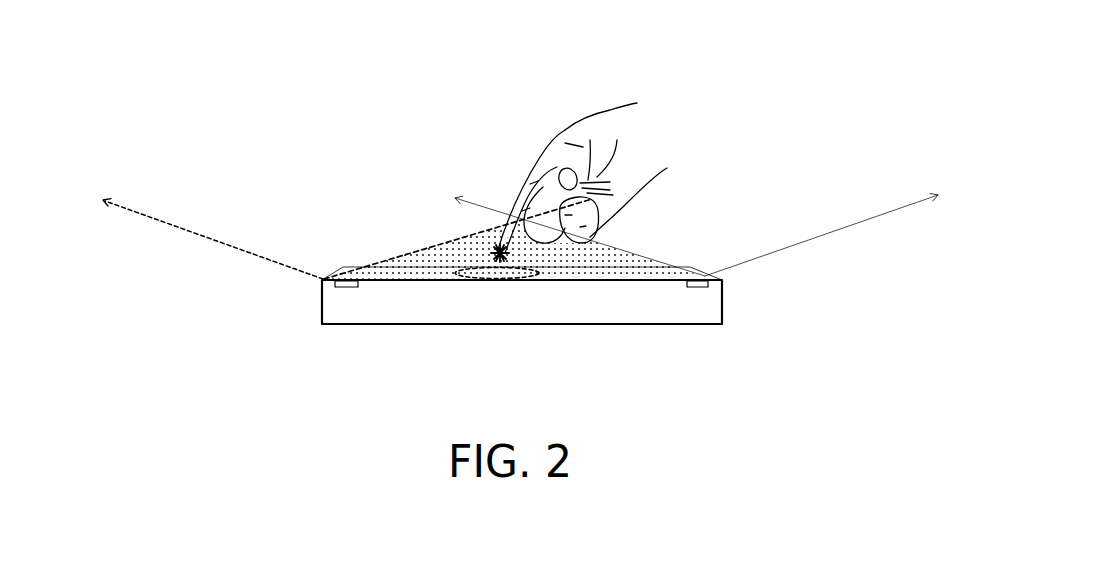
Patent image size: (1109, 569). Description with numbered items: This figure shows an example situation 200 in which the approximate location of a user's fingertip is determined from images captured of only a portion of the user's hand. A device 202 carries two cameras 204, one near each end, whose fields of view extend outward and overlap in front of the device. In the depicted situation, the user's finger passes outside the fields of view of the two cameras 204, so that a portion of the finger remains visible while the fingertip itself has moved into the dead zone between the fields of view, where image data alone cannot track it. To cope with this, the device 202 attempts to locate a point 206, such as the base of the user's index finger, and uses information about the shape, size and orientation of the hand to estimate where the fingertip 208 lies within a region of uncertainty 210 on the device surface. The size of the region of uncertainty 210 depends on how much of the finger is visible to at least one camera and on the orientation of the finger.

The example situation 200 is at (520, 195).
The device 202 is at (723, 313).
The cameras 204 is at (350, 281).
The point 206 is at (550, 160).
The touch point 208 is at (496, 257).
The region of uncertainty 210 is at (505, 278).